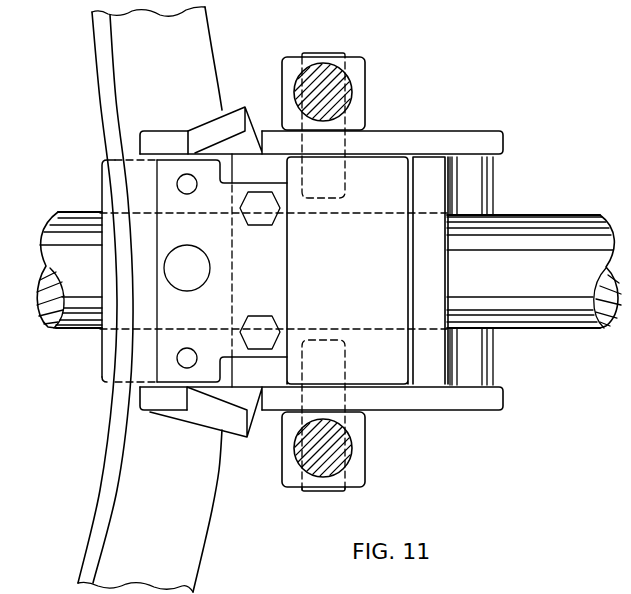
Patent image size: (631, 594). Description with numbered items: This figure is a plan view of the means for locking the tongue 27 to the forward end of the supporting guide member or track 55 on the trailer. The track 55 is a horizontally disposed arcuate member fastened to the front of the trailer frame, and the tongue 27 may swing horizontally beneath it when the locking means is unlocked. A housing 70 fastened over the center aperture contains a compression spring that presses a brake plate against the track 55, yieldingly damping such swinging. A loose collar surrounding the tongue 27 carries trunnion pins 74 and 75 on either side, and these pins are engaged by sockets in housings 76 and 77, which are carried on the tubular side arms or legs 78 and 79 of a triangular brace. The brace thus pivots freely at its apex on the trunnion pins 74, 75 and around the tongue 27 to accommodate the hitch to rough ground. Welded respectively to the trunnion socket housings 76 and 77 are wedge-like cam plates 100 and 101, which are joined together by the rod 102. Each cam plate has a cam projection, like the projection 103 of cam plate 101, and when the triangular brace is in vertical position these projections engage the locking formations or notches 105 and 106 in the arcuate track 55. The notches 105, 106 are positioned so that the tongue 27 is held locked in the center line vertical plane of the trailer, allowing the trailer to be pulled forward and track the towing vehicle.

The tongue 27 is at (542, 213).
The supporting guide member or track 55 is at (195, 48).
The housing 70 is at (192, 291).
The trunnion pin 74 is at (320, 491).
The trunnion pin 75 is at (320, 55).
The housing 76 is at (358, 432).
The housing 77 is at (362, 98).
The tubular side arm or leg 78 is at (335, 455).
The tubular side arm or leg 79 is at (333, 90).
The wedge-like cam plate 100 is at (465, 398).
The wedge-like cam plate 101 is at (398, 132).
The rod 102 is at (475, 172).
The cam projection 103 is at (233, 117).
The locking formation or notch 105 is at (143, 137).
The locking formation or notch 106 is at (143, 413).